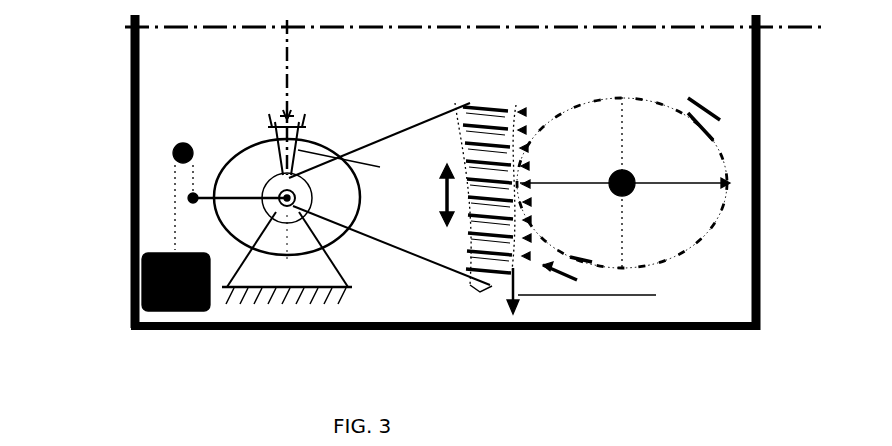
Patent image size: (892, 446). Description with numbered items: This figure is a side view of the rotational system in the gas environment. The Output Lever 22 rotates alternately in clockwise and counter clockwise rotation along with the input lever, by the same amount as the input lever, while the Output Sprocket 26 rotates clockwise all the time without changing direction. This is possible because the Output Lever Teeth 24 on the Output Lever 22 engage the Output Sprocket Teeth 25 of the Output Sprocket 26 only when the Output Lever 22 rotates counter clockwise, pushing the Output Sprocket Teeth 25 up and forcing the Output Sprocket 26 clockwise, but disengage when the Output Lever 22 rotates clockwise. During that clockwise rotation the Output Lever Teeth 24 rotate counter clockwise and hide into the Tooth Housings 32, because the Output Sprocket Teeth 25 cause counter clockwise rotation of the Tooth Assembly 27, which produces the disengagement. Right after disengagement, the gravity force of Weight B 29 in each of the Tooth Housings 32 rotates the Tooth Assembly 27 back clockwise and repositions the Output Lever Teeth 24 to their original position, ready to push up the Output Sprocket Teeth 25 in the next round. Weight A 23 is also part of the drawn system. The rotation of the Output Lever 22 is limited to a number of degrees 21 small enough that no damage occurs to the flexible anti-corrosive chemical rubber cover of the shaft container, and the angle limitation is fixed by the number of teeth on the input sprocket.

The degrees of rotation 21 is at (270, 117).
The Output Lever 22 is at (272, 140).
The Weight A 23 is at (133, 260).
The Output Lever Teeth 24 is at (468, 128).
The Output Sprocket Teeth 25 is at (525, 134).
The Output Sprocket 26 is at (660, 147).
The Tooth Assembly 27 is at (466, 255).
The Weight B 29 is at (619, 295).
The Tooth Housings 32 is at (470, 270).